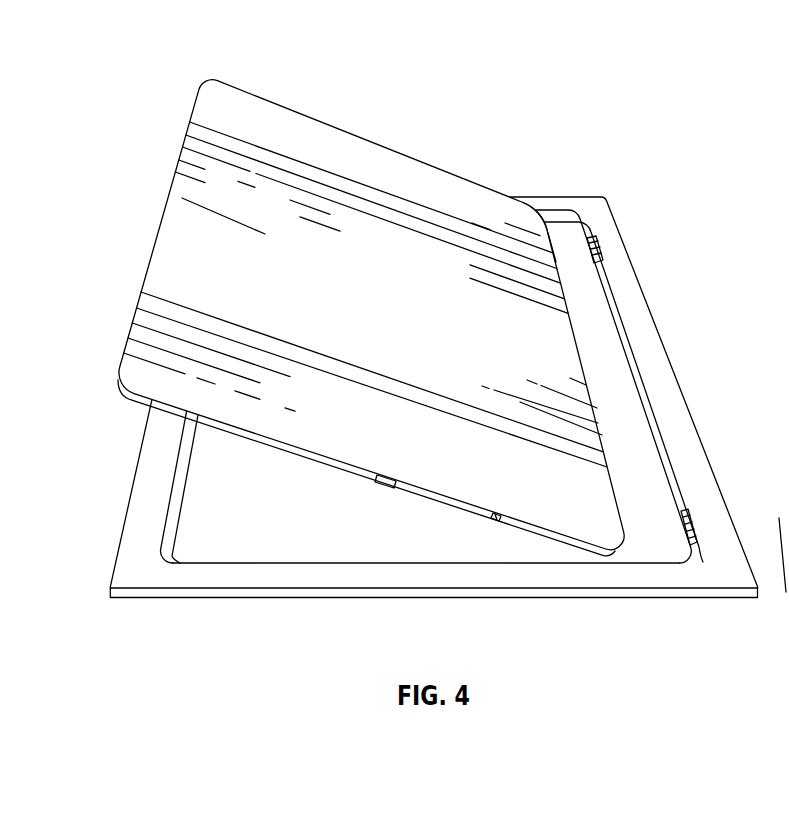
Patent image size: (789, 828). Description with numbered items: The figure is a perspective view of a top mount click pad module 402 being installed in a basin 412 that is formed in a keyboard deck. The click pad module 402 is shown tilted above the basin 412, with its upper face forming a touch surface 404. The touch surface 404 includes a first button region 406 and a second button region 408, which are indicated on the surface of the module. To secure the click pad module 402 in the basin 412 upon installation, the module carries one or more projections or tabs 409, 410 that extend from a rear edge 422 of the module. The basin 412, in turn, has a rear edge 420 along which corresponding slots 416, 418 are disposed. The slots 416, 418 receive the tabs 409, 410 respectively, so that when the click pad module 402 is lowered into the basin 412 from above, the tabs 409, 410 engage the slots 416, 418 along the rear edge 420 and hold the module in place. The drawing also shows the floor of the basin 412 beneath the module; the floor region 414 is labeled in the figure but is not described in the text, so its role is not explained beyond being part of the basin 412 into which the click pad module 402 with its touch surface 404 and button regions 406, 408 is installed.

The top mount click pad module 402 is at (288, 116).
The touch surface 404 is at (378, 180).
The first button region 406 is at (249, 188).
The second button region 408 is at (244, 264).
The tab 409 is at (556, 256).
The tab 410 is at (620, 507).
The basin 412 is at (130, 523).
The recess floor 414 is at (228, 540).
The slot 416 is at (593, 228).
The slot 418 is at (672, 472).
The rear edge of the basin 420 is at (628, 338).
The rear edge of the module 422 is at (499, 311).